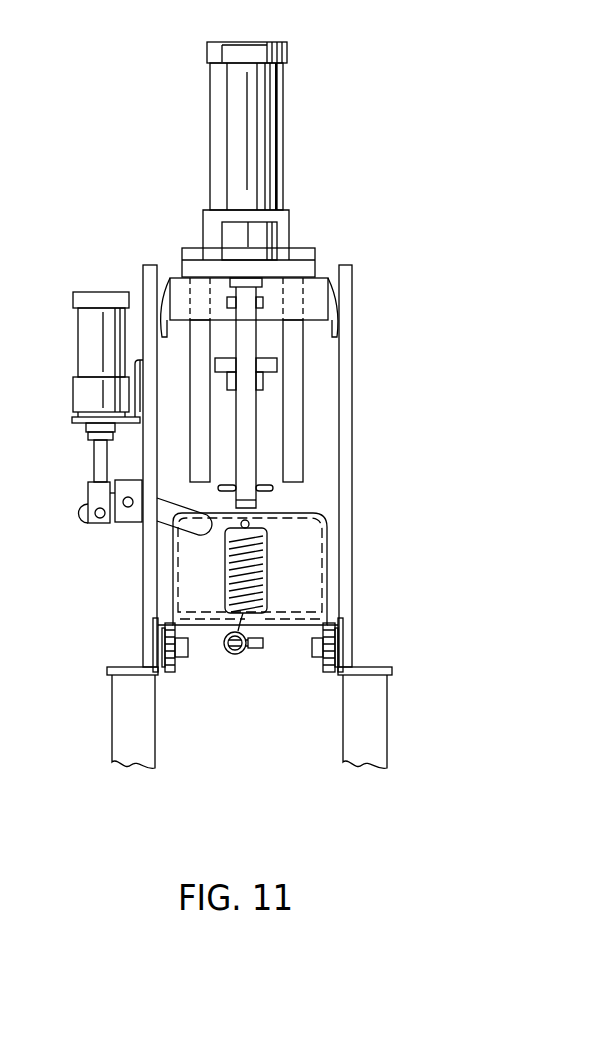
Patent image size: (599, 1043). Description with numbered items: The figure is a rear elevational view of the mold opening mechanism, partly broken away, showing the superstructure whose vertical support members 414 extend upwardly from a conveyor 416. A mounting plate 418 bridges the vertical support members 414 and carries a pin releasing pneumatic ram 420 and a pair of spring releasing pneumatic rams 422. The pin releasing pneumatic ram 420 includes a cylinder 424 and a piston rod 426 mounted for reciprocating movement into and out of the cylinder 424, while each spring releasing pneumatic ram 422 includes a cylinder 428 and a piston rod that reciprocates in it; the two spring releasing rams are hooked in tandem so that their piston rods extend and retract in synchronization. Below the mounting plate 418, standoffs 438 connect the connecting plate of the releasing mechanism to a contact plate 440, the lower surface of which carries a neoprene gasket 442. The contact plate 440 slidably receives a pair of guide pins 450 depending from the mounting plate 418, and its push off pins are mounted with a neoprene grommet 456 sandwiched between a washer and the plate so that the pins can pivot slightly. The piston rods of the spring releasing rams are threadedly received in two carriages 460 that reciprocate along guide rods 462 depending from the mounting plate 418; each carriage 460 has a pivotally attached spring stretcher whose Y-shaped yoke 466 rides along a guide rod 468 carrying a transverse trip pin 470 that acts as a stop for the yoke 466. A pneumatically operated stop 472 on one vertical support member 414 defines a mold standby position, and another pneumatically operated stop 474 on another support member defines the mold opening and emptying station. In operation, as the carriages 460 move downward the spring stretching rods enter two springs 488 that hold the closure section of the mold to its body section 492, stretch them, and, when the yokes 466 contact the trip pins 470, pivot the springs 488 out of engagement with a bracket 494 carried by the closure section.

The vertical support members 414 is at (141, 272).
The conveyor 416 is at (302, 636).
The mounting plate 418 is at (298, 276).
The pin releasing pneumatic ram 420 is at (254, 132).
The spring releasing pneumatic rams 422 is at (254, 58).
The cylinder 424 is at (210, 102).
The piston rod 426 is at (290, 247).
The cylinder 428 is at (235, 134).
The standoffs 438 is at (200, 340).
The contact plate 440 is at (277, 367).
The neoprene gasket 442 is at (272, 381).
The guide pins 450 is at (250, 506).
The neoprene grommet 456 is at (190, 382).
The carriages 460 is at (317, 308).
The guide rods 462 is at (200, 430).
The Y-shaped yoke 466 is at (263, 302).
The guide rod 468 is at (247, 460).
The trip pins 470 is at (263, 488).
The pneumatically operated stop 472 is at (85, 347).
The pneumatically operated stop 474 is at (188, 527).
The springs 488 is at (232, 543).
The body section 492 is at (327, 573).
The bracket 494 is at (208, 612).